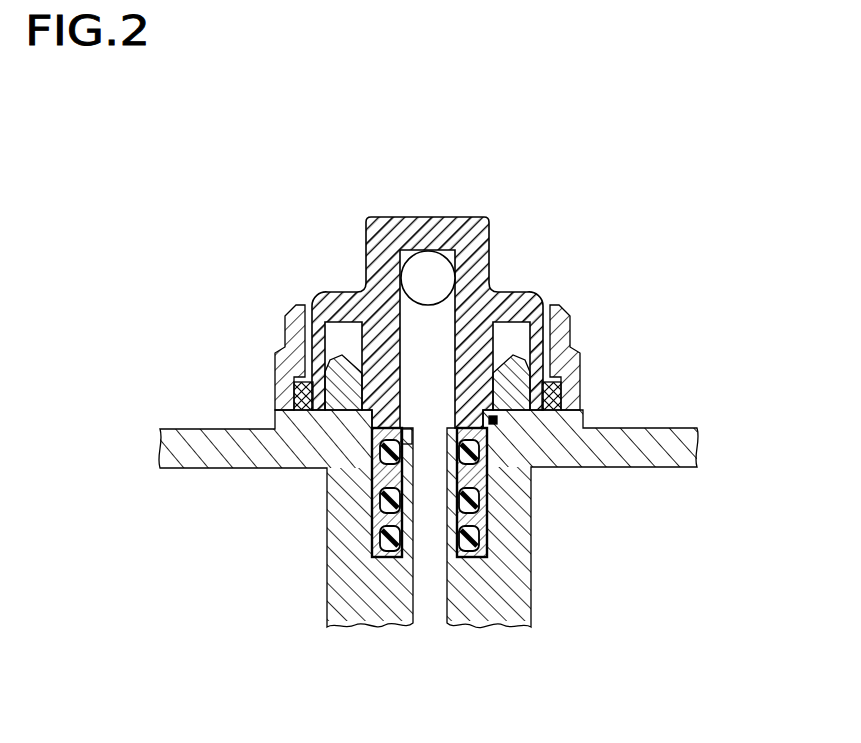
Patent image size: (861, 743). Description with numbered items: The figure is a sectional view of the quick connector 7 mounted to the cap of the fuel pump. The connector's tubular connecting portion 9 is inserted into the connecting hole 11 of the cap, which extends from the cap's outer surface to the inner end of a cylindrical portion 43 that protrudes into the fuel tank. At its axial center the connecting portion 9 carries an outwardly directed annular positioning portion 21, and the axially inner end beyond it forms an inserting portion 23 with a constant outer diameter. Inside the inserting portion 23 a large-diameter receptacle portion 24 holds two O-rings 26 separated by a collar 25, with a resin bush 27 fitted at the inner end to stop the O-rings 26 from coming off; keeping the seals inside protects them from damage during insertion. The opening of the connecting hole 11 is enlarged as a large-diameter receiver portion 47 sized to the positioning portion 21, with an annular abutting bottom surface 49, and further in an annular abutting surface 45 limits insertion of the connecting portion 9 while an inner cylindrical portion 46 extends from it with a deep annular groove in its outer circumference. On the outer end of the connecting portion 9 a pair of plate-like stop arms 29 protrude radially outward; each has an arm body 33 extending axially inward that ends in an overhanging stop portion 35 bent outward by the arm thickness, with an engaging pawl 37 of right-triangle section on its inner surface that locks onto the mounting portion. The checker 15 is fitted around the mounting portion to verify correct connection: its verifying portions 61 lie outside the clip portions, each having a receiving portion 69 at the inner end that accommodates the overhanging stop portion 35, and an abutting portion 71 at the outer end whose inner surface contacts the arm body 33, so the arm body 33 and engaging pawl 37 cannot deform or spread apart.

The quick connector 7 is at (446, 264).
The tubular connecting portion 9 is at (345, 300).
The connecting hole 11 is at (345, 503).
The checker 15 is at (573, 301).
The annular positioning portion 21 is at (380, 427).
The inserting portion 23 is at (483, 543).
The receptacle portion 24 is at (383, 500).
The collar 25 is at (480, 480).
The O-ring 26 is at (378, 442).
The resin bush 27 is at (512, 560).
The stop arm 29 is at (328, 290).
The arm body 33 is at (298, 308).
The overhanging stop portion 35 is at (575, 406).
The engaging pawl 37 is at (285, 391).
The cylindrical portion 43 is at (385, 464).
The annular abutting surface 45 is at (385, 537).
The inner cylindrical portion 46 is at (400, 518).
The large-diameter receiver portion 47 is at (355, 412).
The annular abutting bottom surface 49 is at (497, 422).
The verifying portion 61 is at (283, 328).
The receiving portion 69 is at (275, 375).
The abutting portion 71 is at (272, 342).